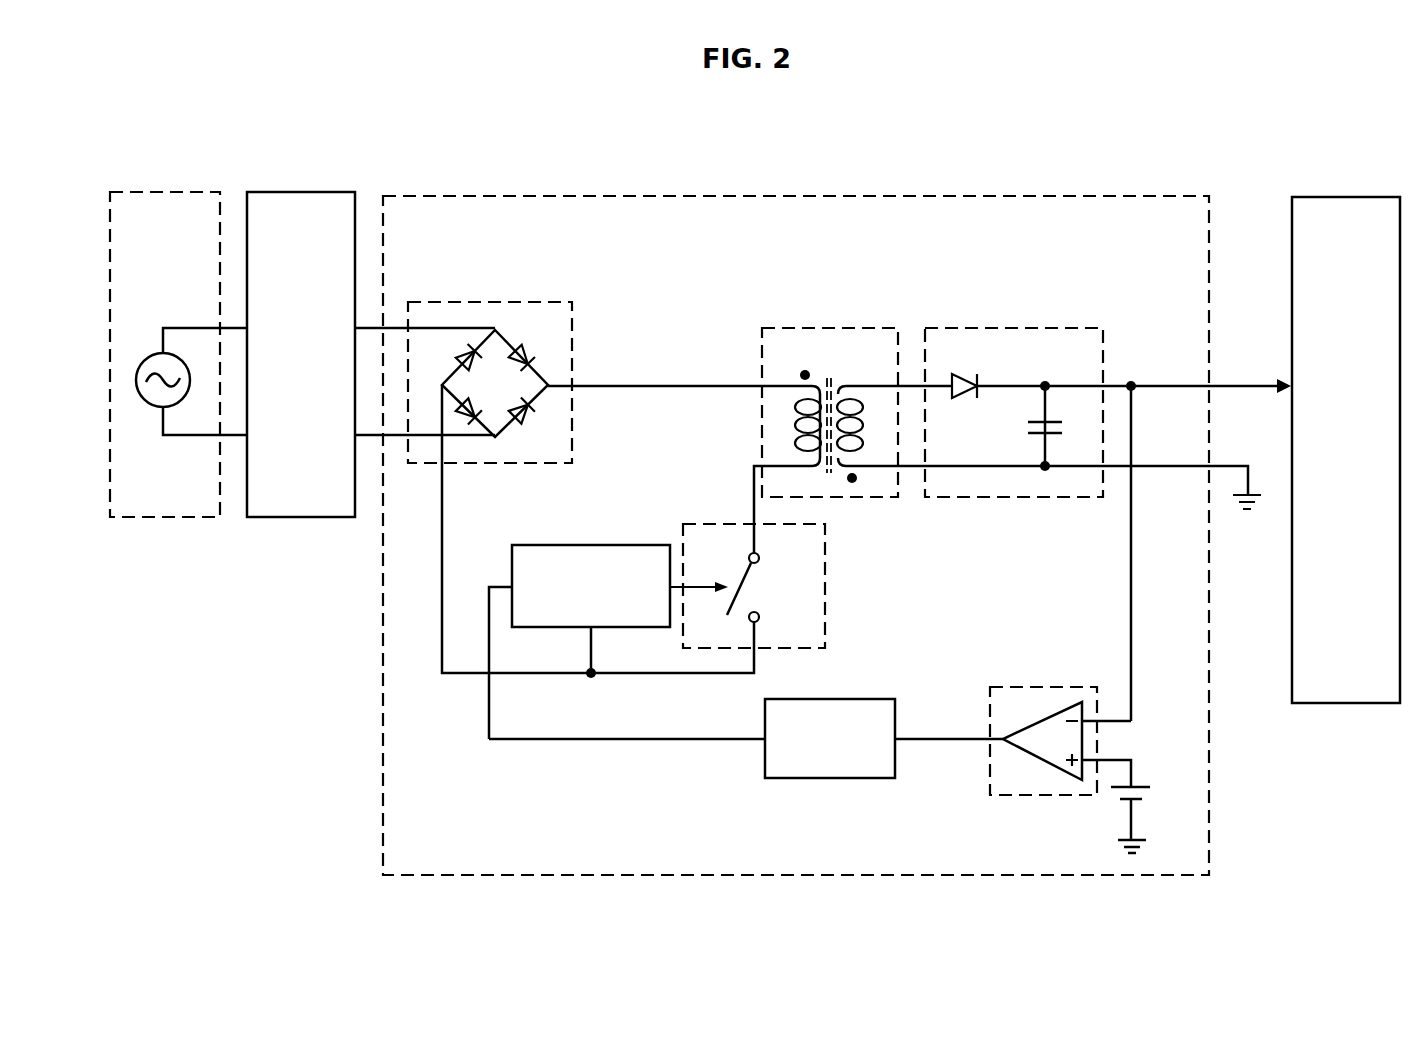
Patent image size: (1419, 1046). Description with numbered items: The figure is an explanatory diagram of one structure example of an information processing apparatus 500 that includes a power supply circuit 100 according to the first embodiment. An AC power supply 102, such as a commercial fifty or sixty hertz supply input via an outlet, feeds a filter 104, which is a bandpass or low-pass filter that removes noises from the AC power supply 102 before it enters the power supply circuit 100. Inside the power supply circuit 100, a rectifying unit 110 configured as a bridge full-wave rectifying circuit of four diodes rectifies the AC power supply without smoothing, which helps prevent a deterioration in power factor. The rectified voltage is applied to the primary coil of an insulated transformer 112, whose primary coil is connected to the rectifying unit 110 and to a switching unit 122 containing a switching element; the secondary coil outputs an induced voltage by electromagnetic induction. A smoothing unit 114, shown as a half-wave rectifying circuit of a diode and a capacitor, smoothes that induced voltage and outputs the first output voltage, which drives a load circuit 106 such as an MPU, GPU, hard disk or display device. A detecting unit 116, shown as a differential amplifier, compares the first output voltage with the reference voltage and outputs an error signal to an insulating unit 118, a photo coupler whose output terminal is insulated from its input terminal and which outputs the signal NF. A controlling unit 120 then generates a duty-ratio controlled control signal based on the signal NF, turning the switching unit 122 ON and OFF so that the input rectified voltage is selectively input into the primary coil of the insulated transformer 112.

The information processing apparatus 500 is at (1376, 81).
The power supply circuit 100 is at (1099, 194).
The AC power supply 102 is at (161, 192).
The filter 104 is at (297, 192).
The load circuit 106 is at (1342, 192).
The rectifying unit 110 is at (487, 312).
The insulated transformer 112 is at (825, 327).
The smoothing unit 114 is at (1015, 328).
The detecting unit 116 is at (1045, 797).
The insulating unit 118 is at (829, 779).
The controlling unit 120 is at (587, 544).
The switching unit 122 is at (828, 589).